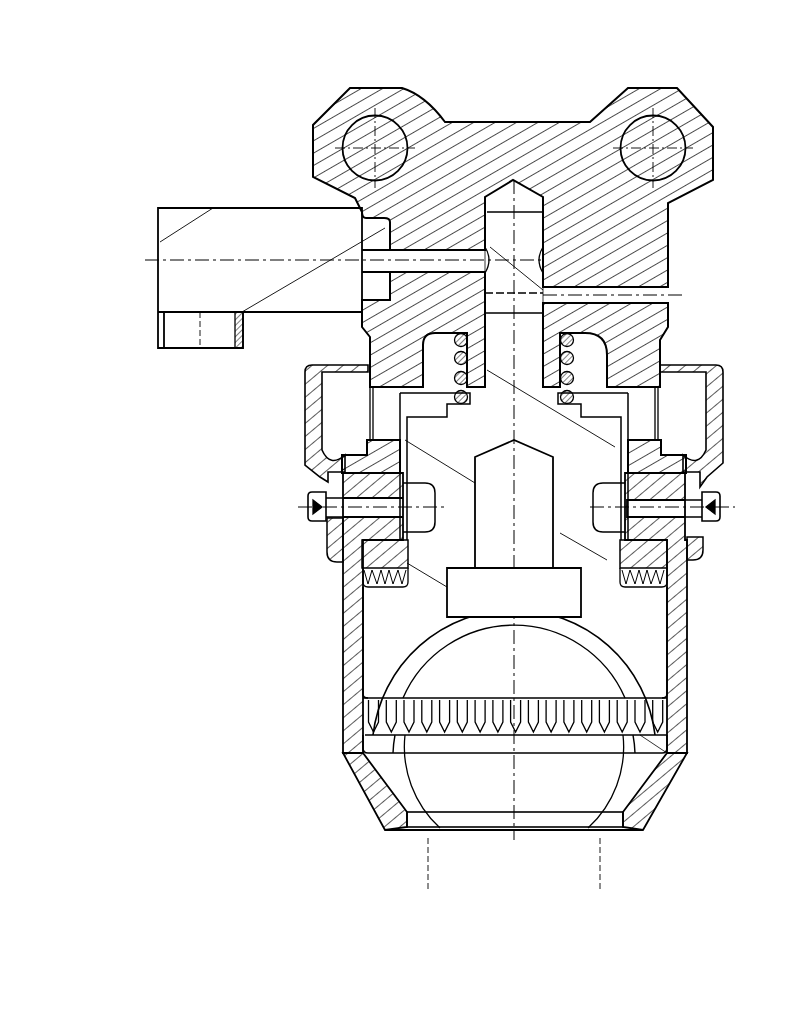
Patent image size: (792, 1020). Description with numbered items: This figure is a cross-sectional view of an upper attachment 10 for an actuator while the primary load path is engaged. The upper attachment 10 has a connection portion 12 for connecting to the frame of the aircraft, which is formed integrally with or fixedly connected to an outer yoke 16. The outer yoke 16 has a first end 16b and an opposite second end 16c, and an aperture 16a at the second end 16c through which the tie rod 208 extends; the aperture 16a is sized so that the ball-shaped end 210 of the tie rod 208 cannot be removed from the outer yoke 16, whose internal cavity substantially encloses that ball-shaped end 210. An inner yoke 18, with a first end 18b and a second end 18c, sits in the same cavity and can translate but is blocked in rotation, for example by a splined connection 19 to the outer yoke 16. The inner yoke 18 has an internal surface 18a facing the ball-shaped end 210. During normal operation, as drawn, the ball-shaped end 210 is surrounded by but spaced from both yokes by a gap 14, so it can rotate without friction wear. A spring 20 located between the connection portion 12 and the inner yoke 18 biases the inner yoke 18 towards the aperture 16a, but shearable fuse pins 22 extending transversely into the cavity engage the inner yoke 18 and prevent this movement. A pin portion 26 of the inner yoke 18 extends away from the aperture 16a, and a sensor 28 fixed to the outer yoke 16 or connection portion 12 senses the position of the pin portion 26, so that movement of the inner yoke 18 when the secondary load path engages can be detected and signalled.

The upper attachment 10 is at (697, 80).
The connection portion 12 is at (698, 159).
The gap 14 is at (393, 672).
The outer yoke portion 16 is at (677, 627).
The aperture 16a is at (613, 830).
The first end 16b is at (697, 545).
The second end 16c is at (640, 828).
The inner yoke 18 is at (653, 675).
The internal surface 18a is at (625, 658).
The first end 18b is at (447, 392).
The second end 18c is at (368, 715).
The splined connection 19 is at (658, 743).
The spring 20 is at (603, 335).
The fuse pins 22 is at (700, 503).
The pin portion 26 is at (532, 232).
The sensor 28 is at (242, 215).
The tie rod 208 is at (452, 867).
The ball-shaped end 210 is at (427, 763).